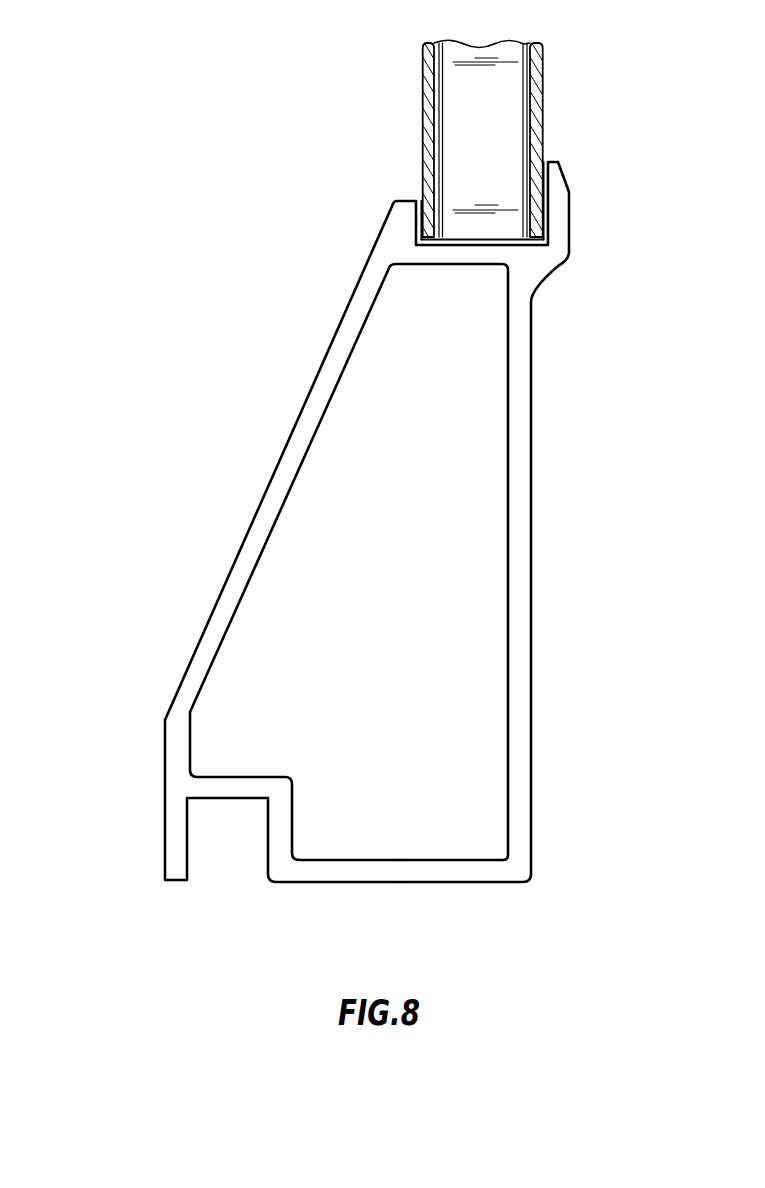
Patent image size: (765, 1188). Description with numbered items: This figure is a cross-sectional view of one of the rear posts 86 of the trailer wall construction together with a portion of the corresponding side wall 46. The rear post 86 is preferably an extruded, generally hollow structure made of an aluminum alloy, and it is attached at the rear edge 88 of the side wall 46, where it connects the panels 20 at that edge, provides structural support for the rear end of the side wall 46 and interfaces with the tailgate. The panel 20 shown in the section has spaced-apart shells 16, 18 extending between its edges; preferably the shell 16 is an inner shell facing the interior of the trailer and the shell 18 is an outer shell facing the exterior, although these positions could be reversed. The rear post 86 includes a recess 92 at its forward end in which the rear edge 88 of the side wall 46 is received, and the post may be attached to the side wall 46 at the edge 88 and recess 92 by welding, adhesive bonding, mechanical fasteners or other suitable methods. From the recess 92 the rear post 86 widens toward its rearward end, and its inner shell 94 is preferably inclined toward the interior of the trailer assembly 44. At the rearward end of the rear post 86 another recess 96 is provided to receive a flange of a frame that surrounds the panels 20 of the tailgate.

The trailer assembly 44 is at (88, 70).
The side wall 46 is at (560, 68).
The shell 16 is at (543, 98).
The shell 18 is at (422, 107).
The panel 20 is at (414, 62).
The recess 92 is at (460, 242).
The rear edge 88 is at (490, 240).
The rear post 86 is at (536, 609).
The inner shell 94 is at (257, 507).
The recess 96 is at (268, 850).